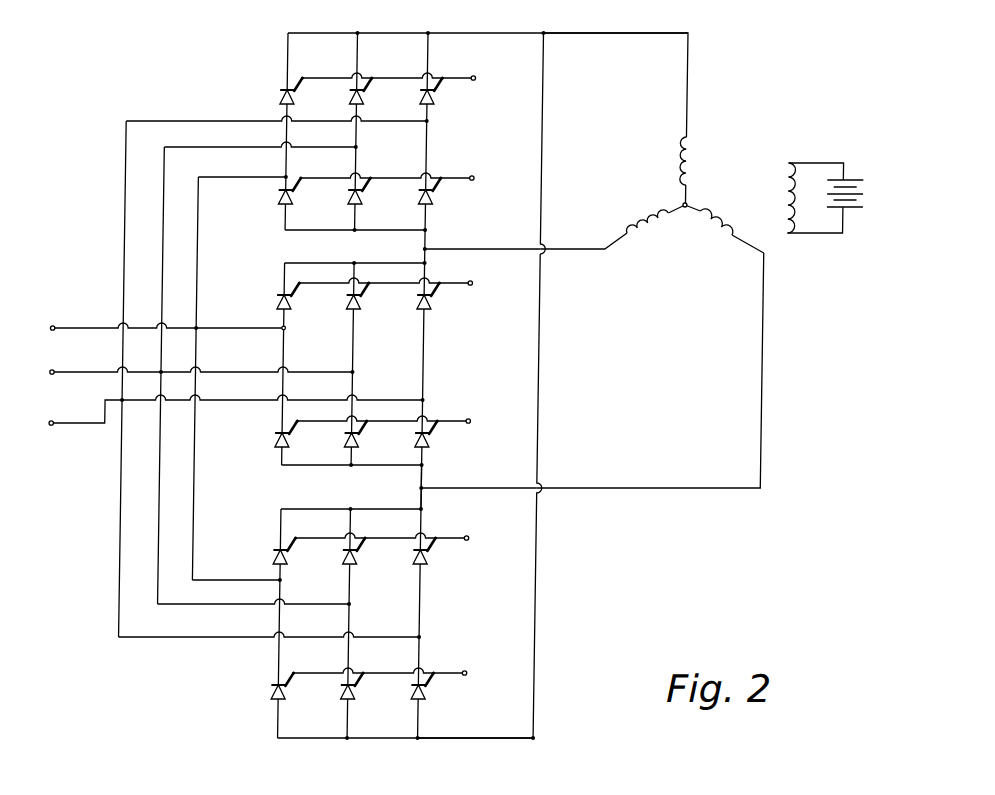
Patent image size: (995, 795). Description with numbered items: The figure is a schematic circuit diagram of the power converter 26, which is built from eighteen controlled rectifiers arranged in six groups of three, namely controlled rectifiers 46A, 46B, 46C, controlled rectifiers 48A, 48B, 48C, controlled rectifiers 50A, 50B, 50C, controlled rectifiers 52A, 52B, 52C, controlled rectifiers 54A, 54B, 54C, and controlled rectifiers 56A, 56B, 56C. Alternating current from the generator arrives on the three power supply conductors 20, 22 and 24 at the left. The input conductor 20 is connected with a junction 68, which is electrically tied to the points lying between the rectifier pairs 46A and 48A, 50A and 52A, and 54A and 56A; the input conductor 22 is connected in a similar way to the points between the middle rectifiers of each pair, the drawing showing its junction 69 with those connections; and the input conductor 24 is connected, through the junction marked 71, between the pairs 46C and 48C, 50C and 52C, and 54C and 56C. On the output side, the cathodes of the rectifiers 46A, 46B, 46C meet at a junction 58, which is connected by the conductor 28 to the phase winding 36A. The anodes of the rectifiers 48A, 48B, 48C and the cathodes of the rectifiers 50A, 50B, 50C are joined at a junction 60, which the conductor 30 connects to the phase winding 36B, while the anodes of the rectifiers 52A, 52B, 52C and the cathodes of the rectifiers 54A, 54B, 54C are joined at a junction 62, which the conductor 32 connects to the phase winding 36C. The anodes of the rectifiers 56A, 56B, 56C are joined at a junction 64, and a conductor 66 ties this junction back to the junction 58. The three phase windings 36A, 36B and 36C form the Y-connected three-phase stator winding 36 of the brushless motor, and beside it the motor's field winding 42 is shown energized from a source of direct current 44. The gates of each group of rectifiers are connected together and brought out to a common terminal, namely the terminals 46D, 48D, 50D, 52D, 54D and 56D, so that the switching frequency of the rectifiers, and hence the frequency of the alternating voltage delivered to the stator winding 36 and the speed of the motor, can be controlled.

The power supply conductor 20 is at (72, 328).
The power supply conductor 22 is at (77, 372).
The power supply conductor 24 is at (81, 423).
The power converter 26 is at (452, 473).
The power supply conductor 28 is at (648, 35).
The power supply conductor 30 is at (575, 248).
The power supply conductor 32 is at (652, 488).
The stator winding 36 is at (701, 187).
The phase winding 36A is at (696, 142).
The phase winding 36B is at (666, 227).
The phase winding 36C is at (730, 226).
The field winding 42 is at (791, 163).
The source of direct current 44 is at (860, 213).
The controlled rectifier 46A is at (283, 100).
The controlled rectifier 46B is at (354, 101).
The controlled rectifier 46C is at (438, 100).
The terminal 46D is at (478, 76).
The controlled rectifier 48A is at (298, 204).
The controlled rectifier 48B is at (367, 204).
The controlled rectifier 48C is at (439, 203).
The terminal 48D is at (480, 176).
The controlled rectifier 50A is at (292, 306).
The controlled rectifier 50B is at (365, 306).
The controlled rectifier 50C is at (437, 307).
The terminal 50D is at (477, 282).
The controlled rectifier 52A is at (282, 454).
The controlled rectifier 52B is at (353, 441).
The controlled rectifier 52C is at (423, 441).
The terminal 52D is at (492, 406).
The controlled rectifier 54A is at (298, 565).
The controlled rectifier 54B is at (366, 565).
The controlled rectifier 54C is at (438, 560).
The terminal 54D is at (477, 539).
The controlled rectifier 56A is at (298, 697).
The controlled rectifier 56B is at (368, 697).
The controlled rectifier 56C is at (440, 697).
The terminal 56D is at (475, 671).
The junction 58 is at (546, 36).
The junction 60 is at (437, 247).
The junction 62 is at (429, 490).
The junction 64 is at (545, 736).
The conductor 66 is at (544, 440).
The junction 68 is at (201, 328).
The junction conductor 69 is at (168, 372).
The junction conductor 71 is at (130, 401).